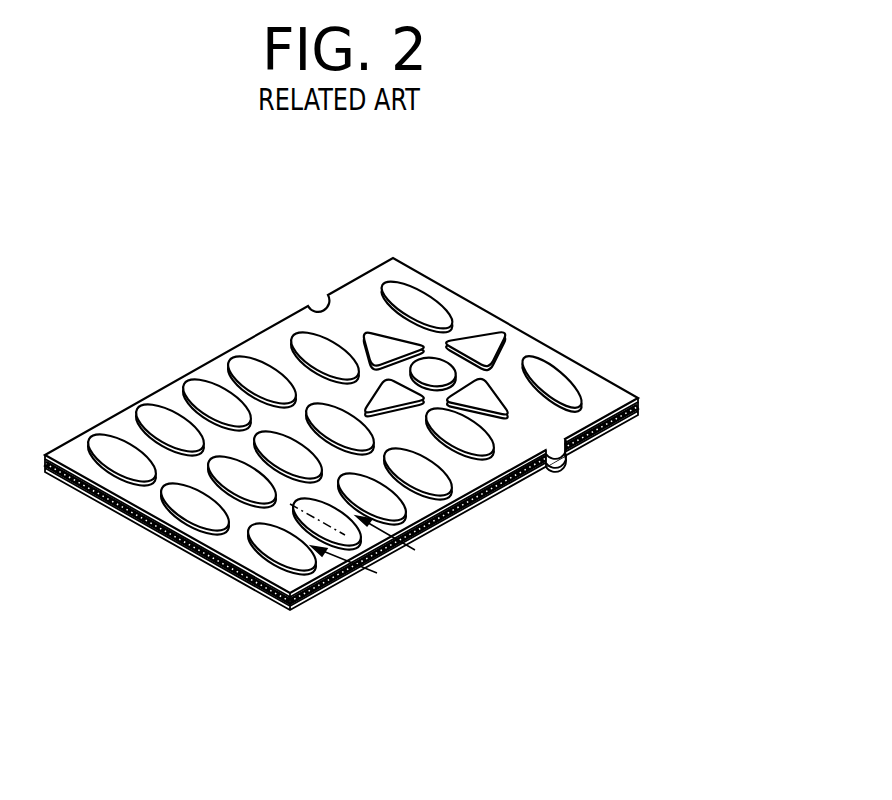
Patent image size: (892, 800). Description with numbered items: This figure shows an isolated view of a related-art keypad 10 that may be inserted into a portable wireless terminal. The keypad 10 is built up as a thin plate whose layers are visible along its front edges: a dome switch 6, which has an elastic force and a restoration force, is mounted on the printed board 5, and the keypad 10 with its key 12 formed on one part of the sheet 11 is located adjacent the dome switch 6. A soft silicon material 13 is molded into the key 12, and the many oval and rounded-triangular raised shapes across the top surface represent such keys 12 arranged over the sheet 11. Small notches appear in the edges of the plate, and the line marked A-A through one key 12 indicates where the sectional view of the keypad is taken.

The keypad 10 is at (393, 434).
The soft silicon material 13 is at (640, 399).
The dome switch 6 is at (642, 405).
The printed board 5 is at (642, 410).
The sheet 11 is at (541, 455).
The key 12 is at (314, 515).